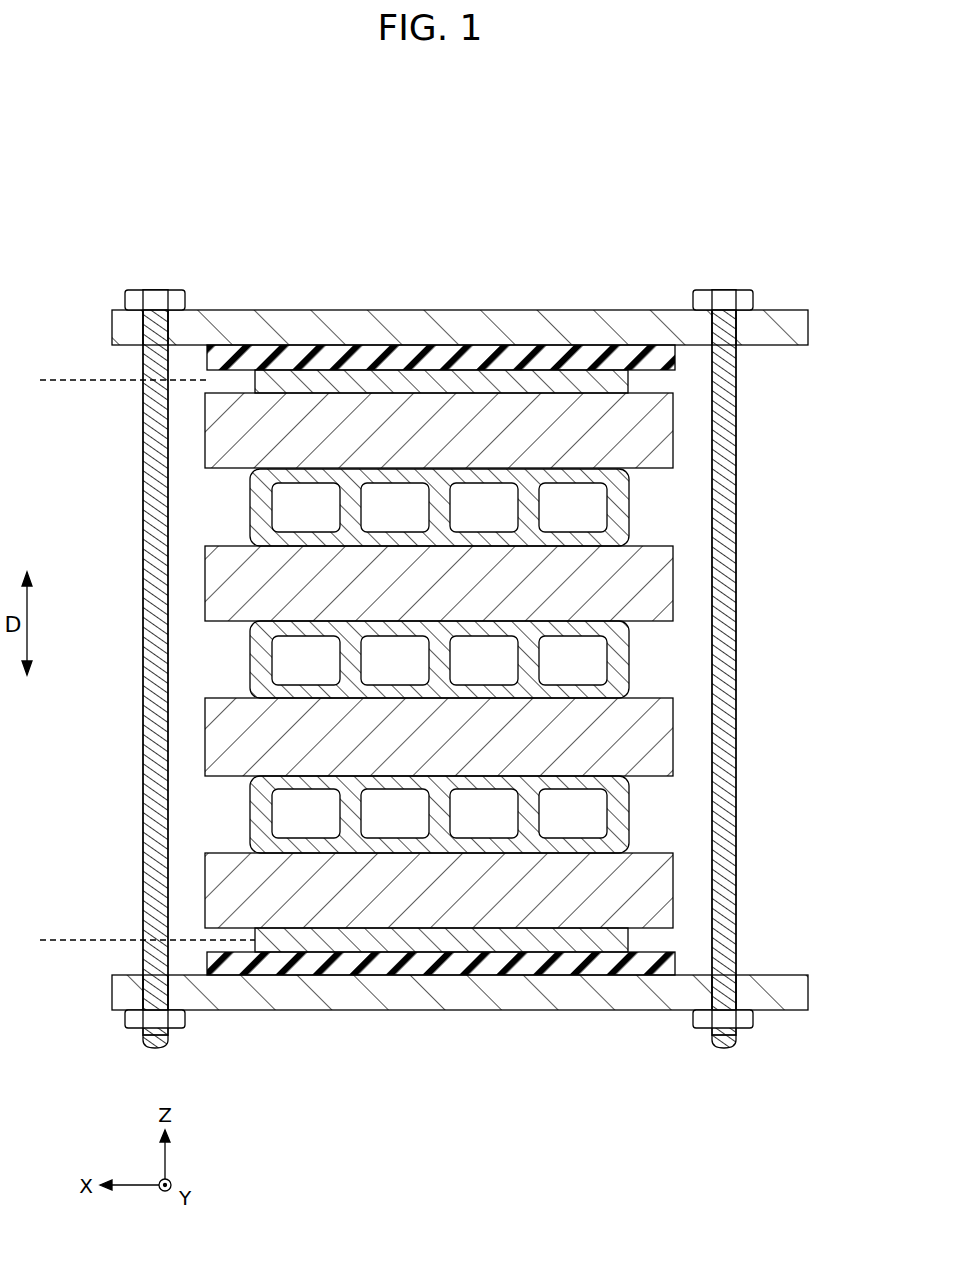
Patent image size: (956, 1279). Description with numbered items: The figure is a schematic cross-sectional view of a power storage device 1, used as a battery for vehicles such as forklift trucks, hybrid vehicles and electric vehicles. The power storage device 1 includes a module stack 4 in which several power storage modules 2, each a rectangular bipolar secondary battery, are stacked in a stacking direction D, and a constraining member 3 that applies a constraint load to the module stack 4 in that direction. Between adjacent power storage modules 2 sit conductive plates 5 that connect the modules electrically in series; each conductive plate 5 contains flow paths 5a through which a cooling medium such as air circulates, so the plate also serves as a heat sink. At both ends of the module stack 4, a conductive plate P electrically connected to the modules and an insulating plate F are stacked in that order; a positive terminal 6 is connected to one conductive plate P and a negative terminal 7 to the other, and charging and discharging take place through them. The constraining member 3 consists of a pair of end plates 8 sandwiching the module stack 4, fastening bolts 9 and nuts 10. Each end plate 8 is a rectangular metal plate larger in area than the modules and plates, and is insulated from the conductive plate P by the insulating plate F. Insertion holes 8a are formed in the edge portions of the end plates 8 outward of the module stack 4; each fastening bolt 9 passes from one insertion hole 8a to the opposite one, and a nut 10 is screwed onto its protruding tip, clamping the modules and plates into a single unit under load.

The power storage device 1 is at (133, 230).
The power storage module 2 is at (673, 441).
The constraining member 3 is at (808, 297).
The module stack 4 is at (692, 628).
The conductive plate 5 is at (629, 532).
The flow path 5a is at (280, 512).
The positive terminal 6 is at (58, 940).
The negative terminal 7 is at (58, 380).
The end plate 8 is at (470, 310).
The insertion hole 8a is at (160, 318).
The fastening bolt 9 is at (143, 612).
The nut 10 is at (135, 1022).
The insulating plate F is at (675, 358).
The conductive plate P is at (628, 383).